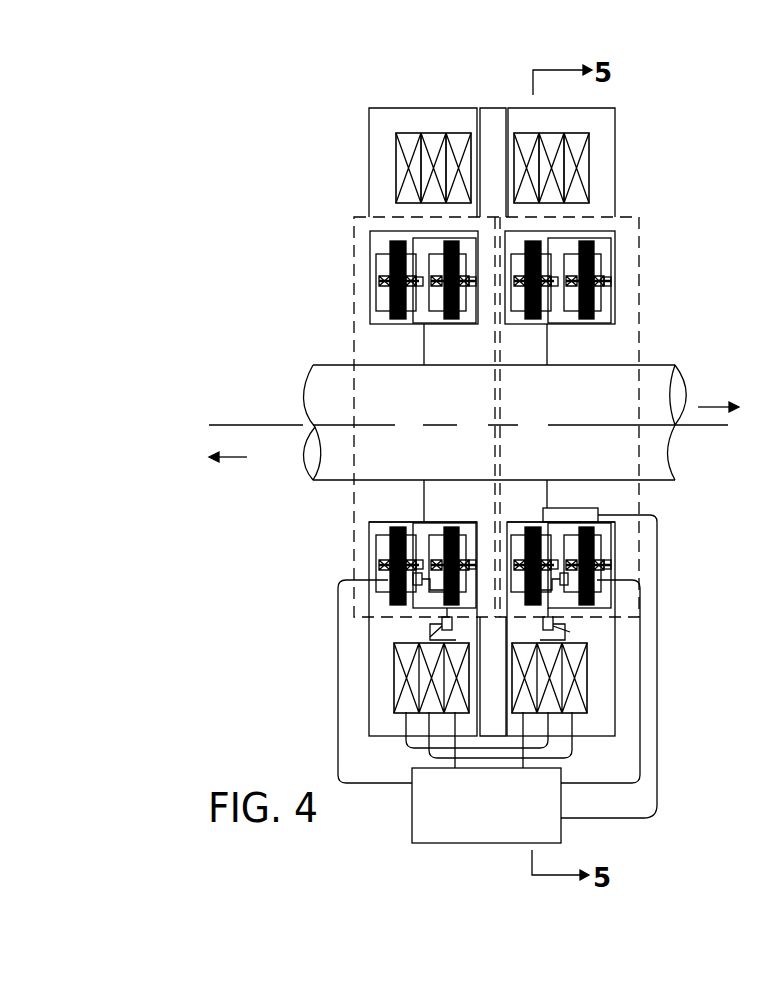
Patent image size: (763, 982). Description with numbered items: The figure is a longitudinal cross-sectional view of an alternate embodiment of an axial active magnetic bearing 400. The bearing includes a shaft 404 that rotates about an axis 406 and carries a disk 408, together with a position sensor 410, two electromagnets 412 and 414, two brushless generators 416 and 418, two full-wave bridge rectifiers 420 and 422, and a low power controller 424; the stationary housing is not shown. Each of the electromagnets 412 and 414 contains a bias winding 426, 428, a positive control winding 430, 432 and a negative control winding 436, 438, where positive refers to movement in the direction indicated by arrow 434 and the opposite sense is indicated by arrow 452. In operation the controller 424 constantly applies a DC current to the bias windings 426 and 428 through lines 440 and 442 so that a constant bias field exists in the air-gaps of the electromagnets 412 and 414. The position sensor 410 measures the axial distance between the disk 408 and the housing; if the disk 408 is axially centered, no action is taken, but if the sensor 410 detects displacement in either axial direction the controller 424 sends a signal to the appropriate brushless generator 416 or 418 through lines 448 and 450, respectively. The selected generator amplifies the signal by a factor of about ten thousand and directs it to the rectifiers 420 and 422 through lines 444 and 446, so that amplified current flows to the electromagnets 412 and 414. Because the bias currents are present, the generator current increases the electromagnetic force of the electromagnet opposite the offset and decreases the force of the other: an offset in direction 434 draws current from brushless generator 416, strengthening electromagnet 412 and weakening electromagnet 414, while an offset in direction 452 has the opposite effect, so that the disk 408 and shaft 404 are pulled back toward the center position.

The magnetic bearing 400 is at (329, 118).
The shaft 404 is at (650, 366).
The axis 406 is at (228, 424).
The disk 408 is at (493, 108).
The position sensor 410 is at (602, 507).
The electromagnet 412 is at (373, 108).
The electromagnet 414 is at (615, 172).
The brushless generator 416 is at (354, 262).
The brushless generator 418 is at (641, 252).
The full-wave bridge rectifier 420 is at (442, 623).
The full-wave bridge rectifier 422 is at (553, 623).
The low power controller 424 is at (412, 817).
The bias winding 426 is at (455, 133).
The bias winding 428 is at (525, 140).
The positive control winding 430 is at (396, 153).
The positive control winding 432 is at (550, 205).
The positive direction 434 is at (712, 406).
The negative control winding 436 is at (432, 133).
The negative control winding 438 is at (590, 153).
The line 440 is at (430, 763).
The line 442 is at (540, 763).
The line 444 is at (430, 637).
The line 446 is at (570, 632).
The line 448 is at (338, 693).
The line 450 is at (640, 675).
The direction 452 is at (238, 458).